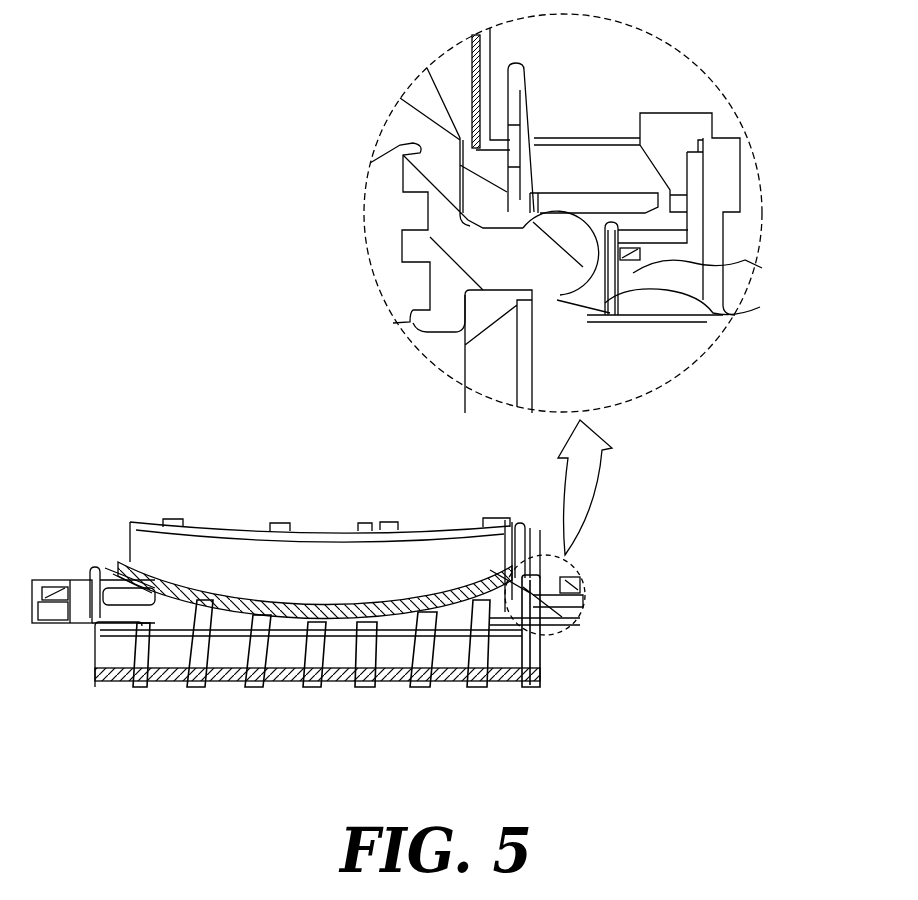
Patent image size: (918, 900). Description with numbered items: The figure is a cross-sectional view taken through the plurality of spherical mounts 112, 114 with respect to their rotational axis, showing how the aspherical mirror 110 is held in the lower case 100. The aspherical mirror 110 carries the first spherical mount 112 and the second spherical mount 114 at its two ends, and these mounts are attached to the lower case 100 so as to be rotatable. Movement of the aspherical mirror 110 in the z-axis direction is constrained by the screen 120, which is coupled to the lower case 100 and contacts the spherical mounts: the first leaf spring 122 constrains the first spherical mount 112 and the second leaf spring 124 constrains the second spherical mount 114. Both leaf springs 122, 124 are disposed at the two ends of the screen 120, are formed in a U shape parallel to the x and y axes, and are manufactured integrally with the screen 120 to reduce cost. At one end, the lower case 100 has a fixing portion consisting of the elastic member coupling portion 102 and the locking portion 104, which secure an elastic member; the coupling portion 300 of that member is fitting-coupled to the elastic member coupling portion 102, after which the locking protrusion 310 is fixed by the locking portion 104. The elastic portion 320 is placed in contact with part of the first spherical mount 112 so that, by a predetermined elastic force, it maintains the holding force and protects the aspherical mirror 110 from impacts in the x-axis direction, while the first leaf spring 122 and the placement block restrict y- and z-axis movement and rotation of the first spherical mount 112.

The lower case 100 is at (287, 684).
The elastic member coupling portion 102 is at (612, 318).
The locking portion 104 is at (628, 322).
The aspherical mirror 110 is at (143, 520).
The first spherical mount 112 is at (560, 630).
The second spherical mount 114 is at (83, 617).
The screen 120 is at (527, 540).
The first leaf spring 122 is at (583, 590).
The second leaf spring 124 is at (82, 573).
The coupling portion 300 is at (740, 312).
The locking protrusion 310 is at (747, 268).
The elastic portion 320 is at (604, 318).